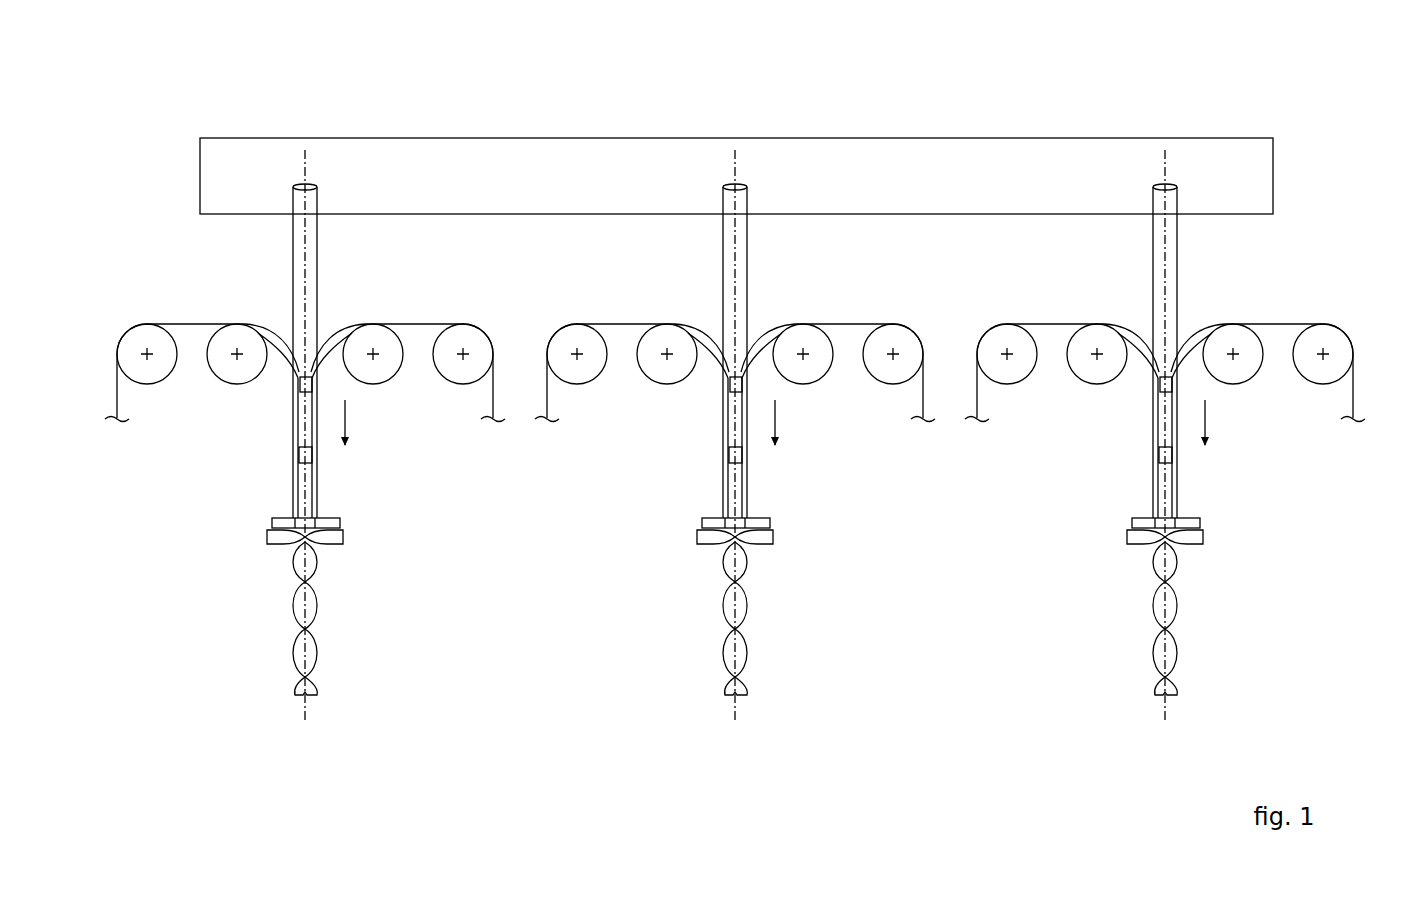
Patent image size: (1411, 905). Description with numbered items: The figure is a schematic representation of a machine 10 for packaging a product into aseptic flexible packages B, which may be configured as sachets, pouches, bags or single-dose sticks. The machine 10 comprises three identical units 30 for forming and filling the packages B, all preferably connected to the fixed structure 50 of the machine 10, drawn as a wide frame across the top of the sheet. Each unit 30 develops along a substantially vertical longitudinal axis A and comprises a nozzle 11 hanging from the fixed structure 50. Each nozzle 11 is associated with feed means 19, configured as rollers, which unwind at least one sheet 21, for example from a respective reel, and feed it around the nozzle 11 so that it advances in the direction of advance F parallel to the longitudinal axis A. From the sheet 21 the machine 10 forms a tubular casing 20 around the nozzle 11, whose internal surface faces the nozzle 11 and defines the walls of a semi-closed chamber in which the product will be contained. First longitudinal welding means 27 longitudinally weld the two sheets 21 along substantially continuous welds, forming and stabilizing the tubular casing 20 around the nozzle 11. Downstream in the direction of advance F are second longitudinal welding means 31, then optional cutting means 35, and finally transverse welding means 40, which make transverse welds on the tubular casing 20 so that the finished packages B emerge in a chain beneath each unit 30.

The machine 10 is at (1268, 120).
The fixed structure 50 is at (942, 152).
The nozzle 11 is at (764, 278).
The tubular casing 20 is at (765, 445).
The feed means 19 is at (735, 365).
The unit for forming and filling the packages 30 is at (735, 320).
The sheet 21 is at (117, 405).
The first longitudinal welding means 27 is at (714, 393).
The second longitudinal welding means 31 is at (715, 455).
The cutting means 35 is at (724, 508).
The transverse welding means 40 is at (736, 537).
The longitudinal axis A is at (757, 436).
The flexible packages B is at (706, 618).
The direction of advance F is at (794, 422).